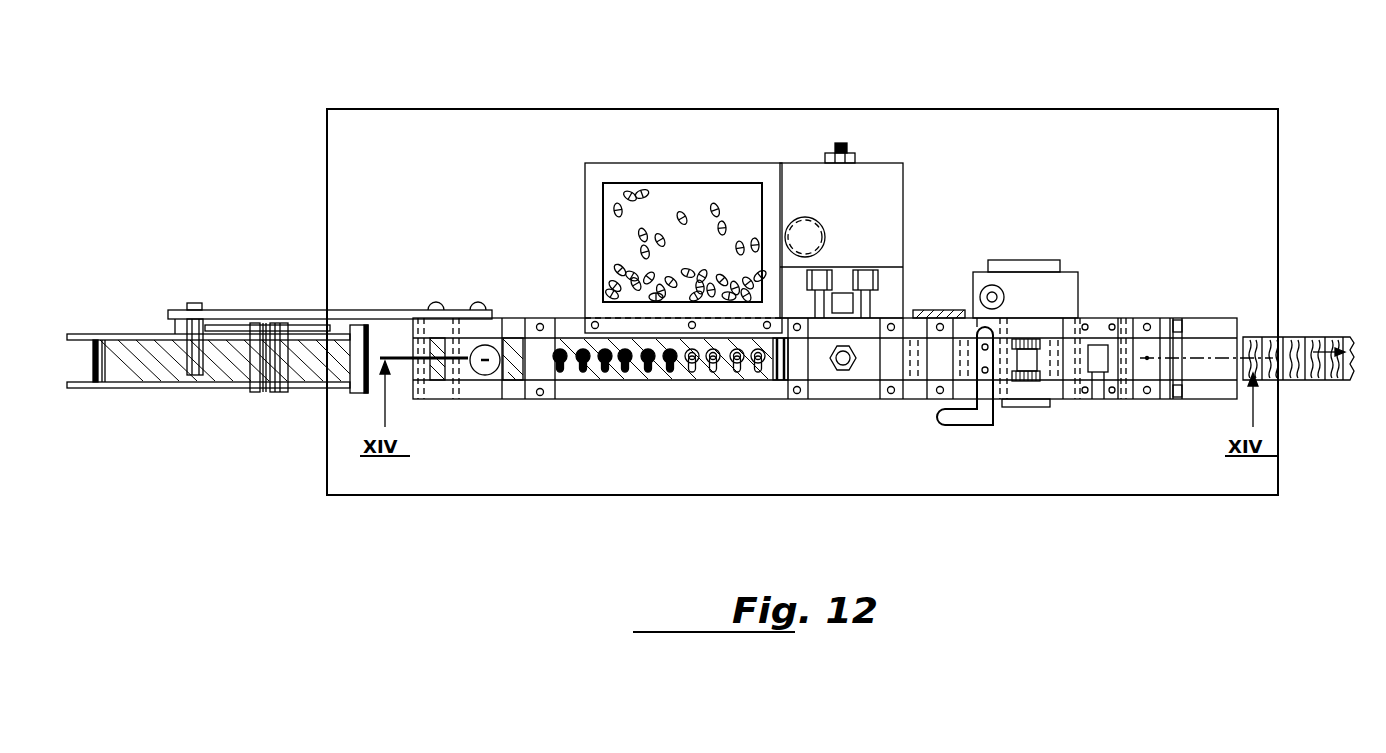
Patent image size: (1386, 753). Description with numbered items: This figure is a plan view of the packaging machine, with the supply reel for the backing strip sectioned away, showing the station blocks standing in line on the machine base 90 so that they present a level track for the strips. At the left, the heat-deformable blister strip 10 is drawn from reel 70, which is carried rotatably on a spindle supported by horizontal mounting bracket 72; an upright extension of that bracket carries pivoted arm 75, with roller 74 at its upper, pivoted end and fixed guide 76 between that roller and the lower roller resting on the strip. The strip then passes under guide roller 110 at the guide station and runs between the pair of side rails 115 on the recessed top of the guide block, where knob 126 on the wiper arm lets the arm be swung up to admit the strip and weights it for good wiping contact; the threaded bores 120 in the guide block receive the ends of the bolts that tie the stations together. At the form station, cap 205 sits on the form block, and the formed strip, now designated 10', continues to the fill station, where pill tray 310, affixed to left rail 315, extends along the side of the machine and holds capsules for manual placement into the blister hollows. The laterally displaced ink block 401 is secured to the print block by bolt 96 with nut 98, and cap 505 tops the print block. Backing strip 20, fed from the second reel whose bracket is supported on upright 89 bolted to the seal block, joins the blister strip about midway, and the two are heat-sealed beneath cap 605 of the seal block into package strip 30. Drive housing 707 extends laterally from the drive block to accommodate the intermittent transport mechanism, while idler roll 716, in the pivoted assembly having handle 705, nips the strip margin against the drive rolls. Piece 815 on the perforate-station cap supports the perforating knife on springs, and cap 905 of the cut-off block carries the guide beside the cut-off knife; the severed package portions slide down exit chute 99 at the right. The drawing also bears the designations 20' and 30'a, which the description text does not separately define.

The base 90 is at (470, 130).
The reel 70 is at (90, 334).
The heat-deformable blister strip 10 is at (330, 387).
The horizontal mounting bracket 72 is at (276, 310).
The pivoted arm 75 is at (228, 326).
The roller 74 is at (197, 376).
The fixed guide 76 is at (275, 392).
The left rail 315 is at (569, 325).
The guide roller 110 is at (412, 376).
The side rails 115 is at (486, 330).
The threaded bores 120 is at (493, 344).
The knob 126 is at (488, 377).
The cap 205 is at (546, 396).
The formed blister strip 10' is at (662, 392).
The pill tray 310 is at (640, 165).
The ink block 401 is at (888, 196).
The nut 98 is at (826, 154).
The bolt 96 is at (842, 143).
The backing strip 20 is at (778, 382).
The cap 505 is at (823, 395).
The guide 20' is at (907, 386).
The upright 89 is at (926, 310).
The cap 605 is at (947, 395).
The handle 705 is at (968, 425).
The drive housing 707 is at (1066, 280).
The idler roll 716 is at (1028, 340).
The piece 815 is at (1102, 347).
The package strip 30 is at (1080, 392).
The cap 905 is at (1136, 398).
The exit chute 99 is at (1206, 318).
The outfeed conveyor 30'a is at (1298, 399).